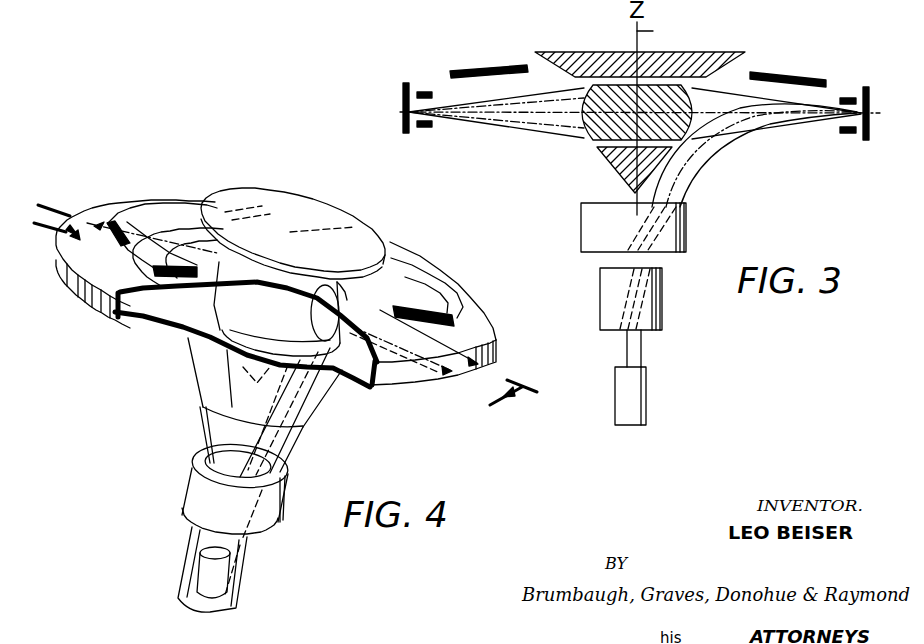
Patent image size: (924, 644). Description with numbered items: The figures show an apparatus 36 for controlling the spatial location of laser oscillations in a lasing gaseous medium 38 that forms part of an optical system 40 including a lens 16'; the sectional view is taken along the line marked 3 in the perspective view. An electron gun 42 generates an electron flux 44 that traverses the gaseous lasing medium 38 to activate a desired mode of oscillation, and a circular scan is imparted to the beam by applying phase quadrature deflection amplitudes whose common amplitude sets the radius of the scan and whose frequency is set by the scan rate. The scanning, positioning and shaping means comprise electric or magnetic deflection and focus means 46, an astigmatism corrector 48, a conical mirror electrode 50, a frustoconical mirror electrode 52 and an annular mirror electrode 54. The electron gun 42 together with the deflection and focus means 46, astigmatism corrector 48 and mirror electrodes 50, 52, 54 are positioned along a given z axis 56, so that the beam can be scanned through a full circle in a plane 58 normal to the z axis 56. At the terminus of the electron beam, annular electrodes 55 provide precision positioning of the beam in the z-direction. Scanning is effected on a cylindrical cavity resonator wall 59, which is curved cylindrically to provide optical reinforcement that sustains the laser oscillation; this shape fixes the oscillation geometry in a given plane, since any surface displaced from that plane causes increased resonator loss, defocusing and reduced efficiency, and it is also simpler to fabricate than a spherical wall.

In FIG. 4, the section line 3-3 (view direction of FIG. 3) 3 is at (284, 317).
In FIG. 3, the lens 16' is at (634, 112).
In FIG. 4, the lens 16' is at (280, 309).
In FIG. 3, the apparatus 36 is at (712, 197).
In FIG. 4, the apparatus 36 is at (336, 408).
In FIG. 3, the lasing gaseous medium 38 is at (718, 97).
In FIG. 3, the optical system 40 is at (874, 110).
In FIG. 3, the electron gun 42 is at (648, 378).
In FIG. 4, the electron gun 42 is at (200, 573).
In FIG. 3, the electron flux 44 is at (781, 118).
In FIG. 4, the electron flux 44 is at (338, 347).
In FIG. 3, the deflection and focus means 46 is at (600, 278).
In FIG. 4, the deflection and focus means 46 is at (182, 481).
In FIG. 3, the astigmatism corrector 48 is at (581, 211).
In FIG. 4, the astigmatism corrector 48 is at (194, 378).
In FIG. 3, the conical mirror electrode 50 is at (606, 156).
In FIG. 4, the conical mirror electrode 50 is at (236, 342).
In FIG. 3, the frustoconical mirror electrode 52 is at (537, 54).
In FIG. 4, the frustoconical mirror electrode 52 is at (306, 263).
In FIG. 3, the annular mirror electrode 54 is at (479, 64).
In FIG. 4, the annular mirror electrode 54 is at (412, 263).
In FIG. 3, the annular electrodes 55 is at (852, 97).
In FIG. 3, the z axis 56 is at (659, 34).
In FIG. 3, the plane 58 is at (481, 112).
In FIG. 3, the cylindrical cavity resonator wall 59 is at (411, 83).
In FIG. 4, the cylindrical cavity resonator wall 59 is at (402, 380).